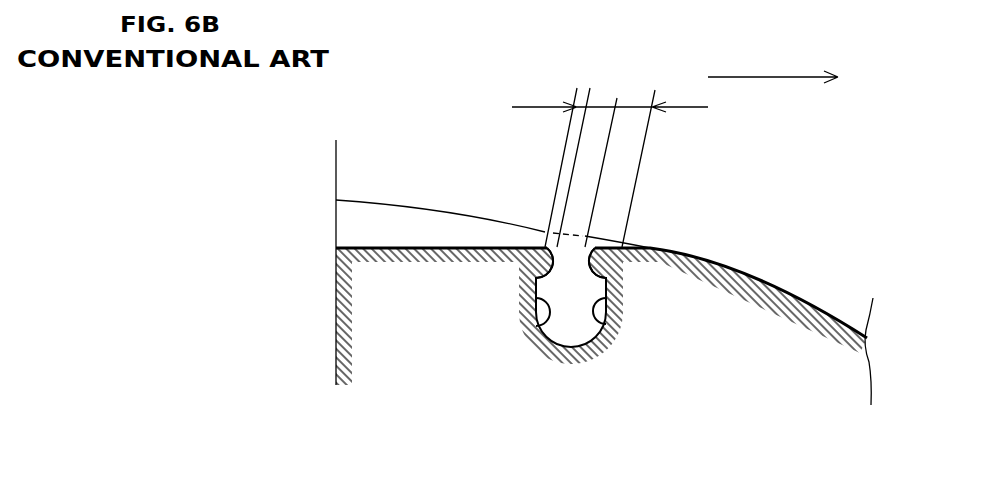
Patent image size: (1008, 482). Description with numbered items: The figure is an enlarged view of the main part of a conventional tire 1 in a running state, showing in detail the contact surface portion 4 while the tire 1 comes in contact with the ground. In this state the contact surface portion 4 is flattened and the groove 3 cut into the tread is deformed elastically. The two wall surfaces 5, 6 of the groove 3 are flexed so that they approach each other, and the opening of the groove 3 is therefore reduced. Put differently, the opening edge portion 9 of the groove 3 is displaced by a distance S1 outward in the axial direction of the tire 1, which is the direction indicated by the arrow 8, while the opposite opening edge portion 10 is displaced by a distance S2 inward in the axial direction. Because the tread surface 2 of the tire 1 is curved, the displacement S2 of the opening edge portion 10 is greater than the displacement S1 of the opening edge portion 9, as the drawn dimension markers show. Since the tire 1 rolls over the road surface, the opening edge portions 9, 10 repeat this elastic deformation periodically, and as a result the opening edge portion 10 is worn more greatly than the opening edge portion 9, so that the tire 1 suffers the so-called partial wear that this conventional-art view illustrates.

The tire 1 is at (392, 178).
The tread surface 2 is at (795, 300).
The groove 3 is at (573, 327).
The contact surface portion 4 is at (413, 247).
The wall surface 5 is at (531, 335).
The wall surface 6 is at (615, 337).
The arrow 8 is at (766, 77).
The opening edge portion 9 is at (533, 276).
The opening edge portion 10 is at (618, 284).
The displacement S1 is at (581, 105).
The displacement S2 is at (634, 104).